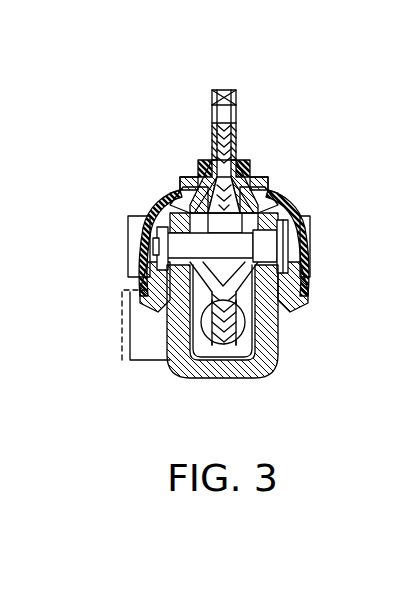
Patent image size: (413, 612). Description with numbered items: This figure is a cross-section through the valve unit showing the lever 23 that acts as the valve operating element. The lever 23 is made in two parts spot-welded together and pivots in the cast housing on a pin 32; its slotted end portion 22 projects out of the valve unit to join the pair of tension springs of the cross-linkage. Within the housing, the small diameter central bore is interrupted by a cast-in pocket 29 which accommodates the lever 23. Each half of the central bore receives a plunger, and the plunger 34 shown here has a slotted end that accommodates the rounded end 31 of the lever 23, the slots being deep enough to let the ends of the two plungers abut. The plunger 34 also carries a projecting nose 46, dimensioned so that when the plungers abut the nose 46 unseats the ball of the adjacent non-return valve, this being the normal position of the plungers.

The slotted end portion 22 is at (238, 107).
The lever 23 is at (243, 136).
The cast-in pocket 29 is at (252, 338).
The rounded end 31 is at (193, 378).
The pin 32 is at (267, 250).
The plunger 34 is at (207, 327).
The projecting nose 46 is at (125, 316).